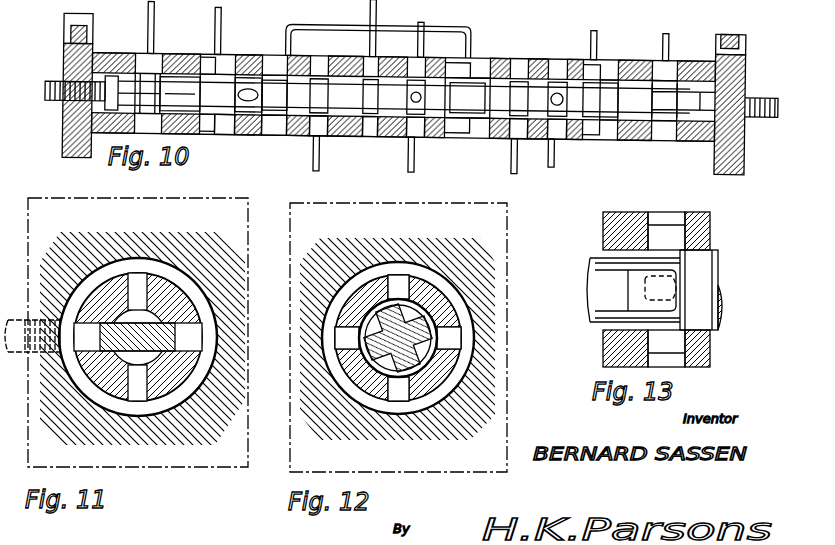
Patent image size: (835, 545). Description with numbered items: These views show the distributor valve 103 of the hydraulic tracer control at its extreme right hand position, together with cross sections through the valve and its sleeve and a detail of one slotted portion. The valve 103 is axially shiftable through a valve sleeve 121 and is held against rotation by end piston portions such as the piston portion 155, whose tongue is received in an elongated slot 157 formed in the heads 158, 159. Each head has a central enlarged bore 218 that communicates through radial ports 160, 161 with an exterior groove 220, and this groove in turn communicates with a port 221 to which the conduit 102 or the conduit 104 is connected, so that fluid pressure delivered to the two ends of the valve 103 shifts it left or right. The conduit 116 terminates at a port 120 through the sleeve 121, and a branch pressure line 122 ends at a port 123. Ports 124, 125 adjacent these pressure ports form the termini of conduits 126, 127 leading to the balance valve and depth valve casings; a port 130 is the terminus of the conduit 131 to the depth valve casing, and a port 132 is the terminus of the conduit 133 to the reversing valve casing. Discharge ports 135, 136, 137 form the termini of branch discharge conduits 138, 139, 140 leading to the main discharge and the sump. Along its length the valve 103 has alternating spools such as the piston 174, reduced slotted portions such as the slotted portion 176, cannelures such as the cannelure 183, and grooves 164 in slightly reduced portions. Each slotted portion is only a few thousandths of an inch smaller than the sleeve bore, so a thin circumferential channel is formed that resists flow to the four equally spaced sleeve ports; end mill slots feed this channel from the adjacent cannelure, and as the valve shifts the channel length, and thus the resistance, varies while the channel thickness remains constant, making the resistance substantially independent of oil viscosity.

In FIG. 10, the conduit or channel 102 is at (151, 50).
In FIG. 10, the distributing valve 103 is at (198, 50).
In FIG. 12, the distributing valve 103 is at (393, 360).
In FIG. 13, the distributing valve 103 is at (718, 258).
In FIG. 10, the conduit or channel 104 is at (670, 42).
In FIG. 11, the conduit or channel 104 is at (17, 322).
In FIG. 10, the conduit 116 is at (283, 28).
In FIG. 10, the port 120 is at (283, 67).
In FIG. 10, the valve sleeve 121 is at (272, 140).
In FIG. 11, the valve sleeve 121 is at (194, 305).
In FIG. 12, the valve sleeve 121 is at (447, 315).
In FIG. 13, the valve sleeve 121 is at (712, 214).
In FIG. 10, the branch pressure line 122 is at (332, 26).
In FIG. 10, the port 123 is at (472, 72).
In FIG. 10, the port 124 is at (320, 140).
In FIG. 10, the port 125 is at (416, 140).
In FIG. 10, the conduit or channel 126 is at (312, 168).
In FIG. 10, the conduit or channel 127 is at (407, 168).
In FIG. 10, the port 130 is at (519, 143).
In FIG. 12, the port 130 is at (400, 275).
In FIG. 13, the port 130 is at (663, 233).
In FIG. 10, the conduit or channel 131 is at (512, 161).
In FIG. 10, the port 132 is at (554, 140).
In FIG. 10, the conduit or channel 133 is at (556, 162).
In FIG. 10, the port 135 is at (225, 140).
In FIG. 10, the port 136 is at (364, 140).
In FIG. 10, the port 137 is at (603, 70).
In FIG. 10, the branch discharge conduit 138 is at (218, 50).
In FIG. 10, the branch discharge conduit 139 is at (377, 53).
In FIG. 10, the branch discharge conduit 140 is at (597, 40).
In FIG. 11, the piston portion 155 is at (168, 337).
In FIG. 11, the elongated slot 157 is at (194, 342).
In FIG. 10, the head 158 is at (65, 142).
In FIG. 10, the head 159 is at (735, 147).
In FIG. 10, the port 160 is at (150, 62).
In FIG. 10, the port 161 is at (668, 70).
In FIG. 11, the port 161 is at (142, 281).
In FIG. 12, the groove 164 is at (420, 323).
In FIG. 13, the piston 174 is at (718, 330).
In FIG. 13, the slotted portion 176 is at (657, 250).
In FIG. 13, the cannelure 183 is at (603, 263).
In FIG. 11, the enlarged bore 218 is at (152, 318).
In FIG. 11, the groove 220 is at (177, 277).
In FIG. 11, the port 221 is at (62, 320).